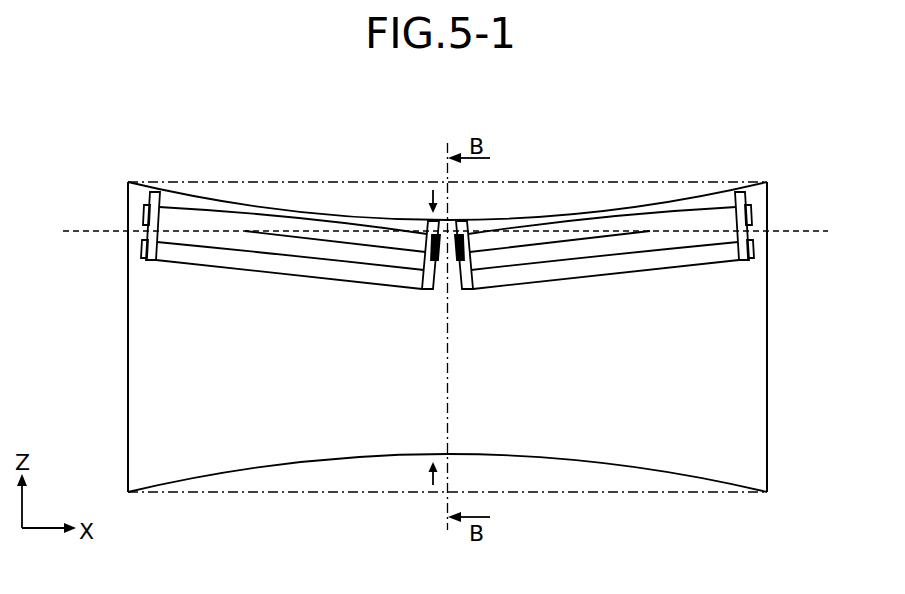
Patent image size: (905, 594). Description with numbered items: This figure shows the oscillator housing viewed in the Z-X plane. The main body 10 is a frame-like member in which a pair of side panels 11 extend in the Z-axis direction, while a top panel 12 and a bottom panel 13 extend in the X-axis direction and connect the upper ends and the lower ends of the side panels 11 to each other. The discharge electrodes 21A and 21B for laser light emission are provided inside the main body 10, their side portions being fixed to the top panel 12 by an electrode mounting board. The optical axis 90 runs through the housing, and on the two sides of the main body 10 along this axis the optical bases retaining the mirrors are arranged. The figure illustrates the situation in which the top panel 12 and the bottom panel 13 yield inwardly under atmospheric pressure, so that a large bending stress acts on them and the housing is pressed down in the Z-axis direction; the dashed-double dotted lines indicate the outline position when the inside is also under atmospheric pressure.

The main body 10 is at (781, 191).
The side panel 11 is at (128, 334).
The top panel 12 is at (365, 218).
The bottom panel 13 is at (310, 458).
The discharge electrode 21A is at (185, 217).
The discharge electrode 21B is at (705, 205).
The optical axis 90 is at (100, 230).